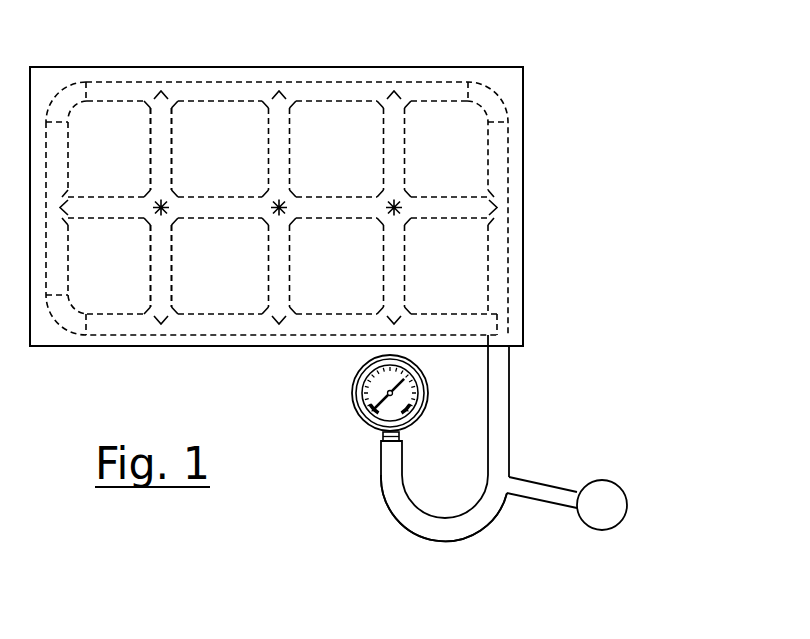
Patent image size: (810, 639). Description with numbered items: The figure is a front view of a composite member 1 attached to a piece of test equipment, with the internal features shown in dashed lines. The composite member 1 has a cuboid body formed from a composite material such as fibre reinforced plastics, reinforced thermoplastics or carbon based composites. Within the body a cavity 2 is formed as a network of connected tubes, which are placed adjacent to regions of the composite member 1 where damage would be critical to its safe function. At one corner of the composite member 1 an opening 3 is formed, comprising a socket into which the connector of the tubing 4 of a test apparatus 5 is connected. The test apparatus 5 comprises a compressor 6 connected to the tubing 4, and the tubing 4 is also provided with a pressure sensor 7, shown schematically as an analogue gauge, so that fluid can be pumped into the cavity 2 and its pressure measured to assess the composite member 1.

The composite member 1 is at (492, 67).
The cavity 2 is at (163, 95).
The opening 3 is at (509, 352).
The tubing 4 is at (509, 443).
The test apparatus 5 is at (507, 551).
The compressor 6 is at (613, 527).
The pressure sensor 7 is at (353, 408).